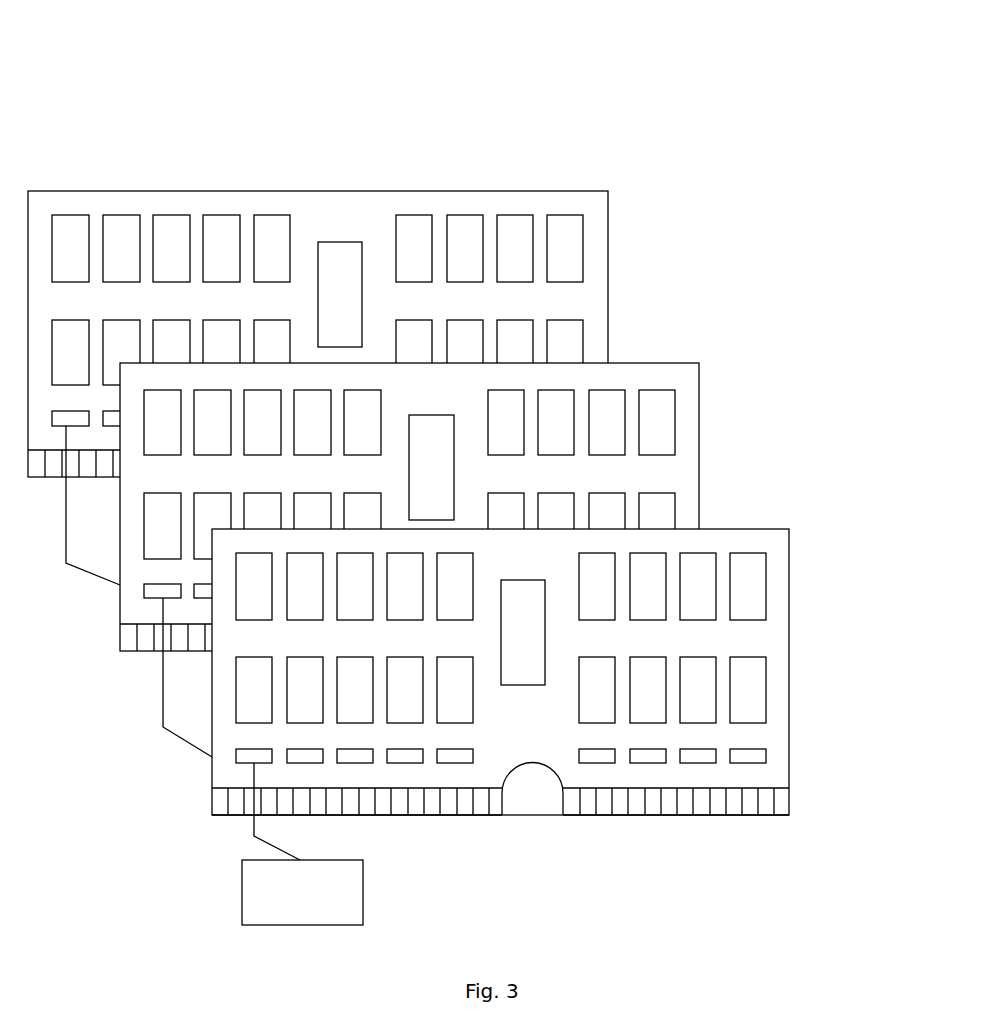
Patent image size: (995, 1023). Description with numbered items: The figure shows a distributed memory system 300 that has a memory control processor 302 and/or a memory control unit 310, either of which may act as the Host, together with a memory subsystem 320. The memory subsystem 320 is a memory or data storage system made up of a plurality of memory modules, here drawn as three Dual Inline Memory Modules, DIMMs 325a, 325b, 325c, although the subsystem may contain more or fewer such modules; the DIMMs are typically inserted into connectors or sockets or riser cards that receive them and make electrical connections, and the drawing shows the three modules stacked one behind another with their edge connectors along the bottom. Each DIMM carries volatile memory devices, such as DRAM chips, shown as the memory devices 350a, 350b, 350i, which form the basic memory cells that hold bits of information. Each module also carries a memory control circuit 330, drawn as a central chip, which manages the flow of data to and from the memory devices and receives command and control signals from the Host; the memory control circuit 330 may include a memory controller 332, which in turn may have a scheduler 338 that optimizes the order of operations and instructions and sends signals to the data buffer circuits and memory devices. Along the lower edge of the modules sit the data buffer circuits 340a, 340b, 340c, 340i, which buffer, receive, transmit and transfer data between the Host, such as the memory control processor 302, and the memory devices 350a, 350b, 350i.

The distributed memory system 300 is at (148, 118).
The memory subsystem 320 is at (704, 308).
The DIMM 325a is at (789, 553).
The DIMM 325b is at (699, 396).
The DIMM 325c is at (608, 221).
The memory control circuit 330 is at (410, 415).
The memory controller 332 is at (453, 433).
The scheduler 338 is at (443, 451).
The memory device 350a is at (748, 587).
The memory device 350b is at (698, 690).
The memory device 350i is at (254, 689).
The data buffer circuit 340a is at (766, 756).
The data buffer circuit 340b is at (697, 763).
The data buffer circuit 340c is at (633, 757).
The data buffer circuit 340i is at (240, 757).
The memory control processor 302 is at (242, 882).
The memory control unit 310 is at (363, 925).